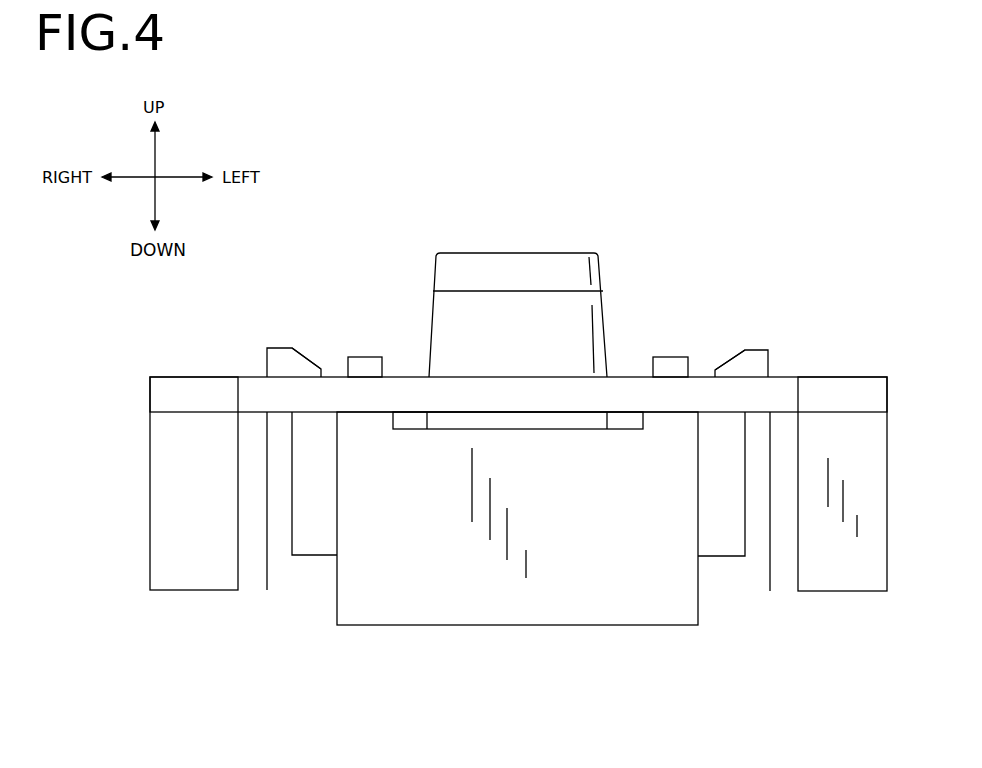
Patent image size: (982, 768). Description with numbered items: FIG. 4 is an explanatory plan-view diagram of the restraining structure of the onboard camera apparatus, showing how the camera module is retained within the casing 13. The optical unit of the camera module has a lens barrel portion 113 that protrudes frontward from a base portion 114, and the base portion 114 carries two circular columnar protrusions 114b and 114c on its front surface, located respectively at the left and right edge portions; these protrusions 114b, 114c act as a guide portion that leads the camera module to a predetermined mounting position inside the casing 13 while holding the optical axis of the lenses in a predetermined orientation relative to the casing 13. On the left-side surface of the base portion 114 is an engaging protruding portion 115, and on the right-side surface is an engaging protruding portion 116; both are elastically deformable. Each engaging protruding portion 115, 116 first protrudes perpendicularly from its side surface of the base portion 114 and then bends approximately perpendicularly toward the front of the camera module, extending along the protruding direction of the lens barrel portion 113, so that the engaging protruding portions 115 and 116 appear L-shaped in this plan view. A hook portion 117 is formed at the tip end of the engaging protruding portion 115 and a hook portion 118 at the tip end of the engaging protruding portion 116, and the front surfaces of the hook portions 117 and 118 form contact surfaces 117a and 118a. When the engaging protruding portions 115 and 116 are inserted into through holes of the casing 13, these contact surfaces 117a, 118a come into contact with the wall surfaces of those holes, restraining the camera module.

The casing 13 is at (150, 453).
The lens barrel portion 113 is at (430, 317).
The base portion 114 is at (698, 612).
The protrusion 114b is at (668, 357).
The protrusion 114c is at (370, 357).
The engaging protruding portion 115 is at (770, 457).
The engaging protruding portion 116 is at (267, 457).
The hook portion 117 is at (755, 350).
The contact surface 117a is at (720, 368).
The hook portion 118 is at (282, 348).
The contact surface 118a is at (316, 366).